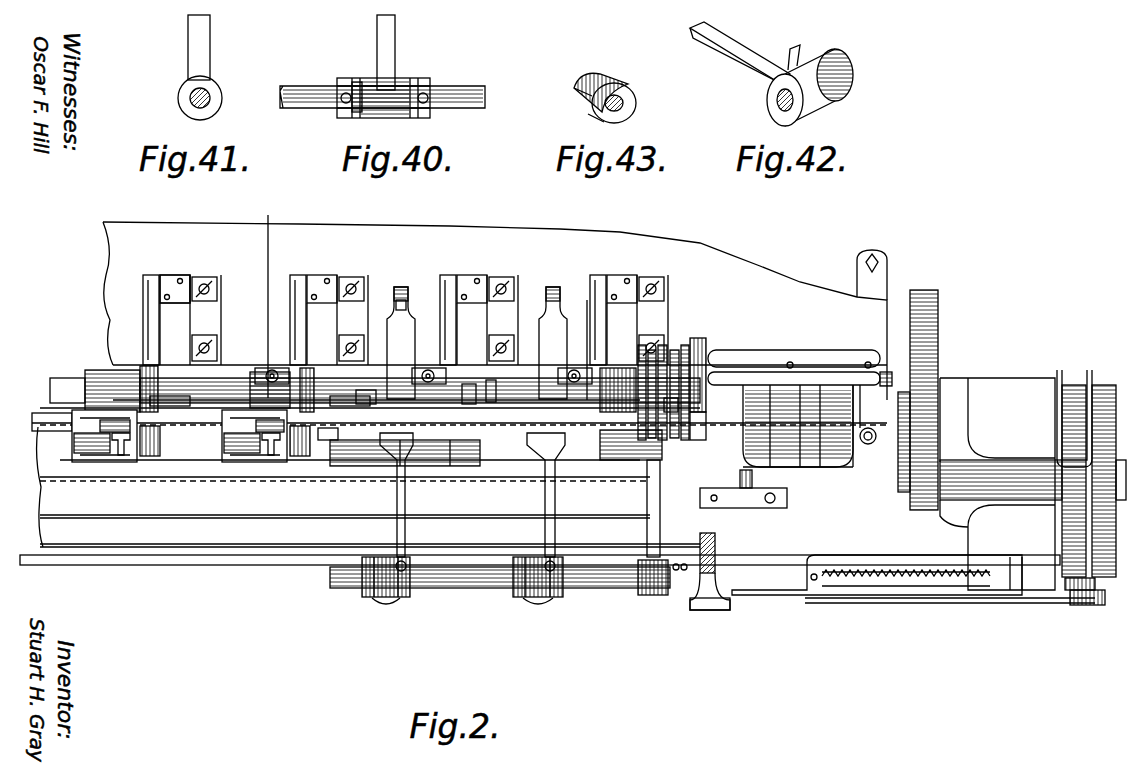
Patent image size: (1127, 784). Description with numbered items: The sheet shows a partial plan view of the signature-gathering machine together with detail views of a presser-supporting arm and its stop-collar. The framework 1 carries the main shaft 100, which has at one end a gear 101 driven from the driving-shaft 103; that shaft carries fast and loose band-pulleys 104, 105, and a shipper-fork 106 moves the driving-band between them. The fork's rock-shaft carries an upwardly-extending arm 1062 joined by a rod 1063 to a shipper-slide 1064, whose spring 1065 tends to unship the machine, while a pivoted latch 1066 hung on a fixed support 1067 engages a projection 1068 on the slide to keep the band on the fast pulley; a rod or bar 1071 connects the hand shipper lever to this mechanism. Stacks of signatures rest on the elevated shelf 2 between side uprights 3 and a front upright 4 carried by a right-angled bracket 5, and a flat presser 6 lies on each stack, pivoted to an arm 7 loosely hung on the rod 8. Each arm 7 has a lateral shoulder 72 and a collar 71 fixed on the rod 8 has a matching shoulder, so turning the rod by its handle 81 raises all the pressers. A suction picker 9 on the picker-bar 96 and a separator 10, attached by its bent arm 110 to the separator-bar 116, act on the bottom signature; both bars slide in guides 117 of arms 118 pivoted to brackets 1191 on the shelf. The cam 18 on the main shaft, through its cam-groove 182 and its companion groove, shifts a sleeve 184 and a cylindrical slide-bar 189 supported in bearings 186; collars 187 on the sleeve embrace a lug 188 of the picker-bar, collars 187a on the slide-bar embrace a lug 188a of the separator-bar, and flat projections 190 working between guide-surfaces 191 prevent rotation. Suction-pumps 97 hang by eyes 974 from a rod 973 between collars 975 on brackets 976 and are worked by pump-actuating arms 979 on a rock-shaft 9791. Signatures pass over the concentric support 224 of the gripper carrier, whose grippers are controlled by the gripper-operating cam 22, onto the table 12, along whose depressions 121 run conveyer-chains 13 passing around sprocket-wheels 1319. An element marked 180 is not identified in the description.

In FIG. 2, the framework 1 is at (978, 378).
In FIG. 2, the elevated shelf 2 is at (124, 240).
In FIG. 2, the side uprights 3 is at (140, 290).
In FIG. 2, the front upright 4 is at (246, 390).
In FIG. 2, the right-angled bracket 5 is at (150, 316).
In FIG. 2, the presser 6 is at (400, 334).
In FIG. 41, the arm 7 is at (212, 35).
In FIG. 40, the arm 7 is at (396, 32).
In FIG. 42, the arm 7 is at (738, 42).
In FIG. 2, the arm 7 is at (406, 290).
In FIG. 41, the rod 8 is at (189, 99).
In FIG. 40, the rod 8 is at (460, 84).
In FIG. 2, the rod 8 is at (350, 408).
In FIG. 2, the picker 9 is at (588, 400).
In FIG. 2, the separator 10 is at (168, 398).
In FIG. 2, the table 12 is at (232, 506).
In FIG. 2, the conveyer-chains 13 is at (46, 428).
In FIG. 2, the cam 18 is at (796, 468).
In FIG. 2, the gripper-operating cam 22 is at (136, 446).
In FIG. 41, the collar 71 is at (181, 82).
In FIG. 40, the collar 71 is at (344, 78).
In FIG. 43, the collar 71 is at (600, 72).
In FIG. 2, the collar 71 is at (366, 398).
In FIG. 40, the lateral shoulder 72 is at (364, 78).
In FIG. 42, the lateral shoulder 72 is at (752, 90).
In FIG. 2, the arm or handle 81 is at (612, 440).
In FIG. 2, the picker-bar 96 is at (672, 412).
In FIG. 2, the suction-pumps 97 is at (382, 600).
In FIG. 2, the main shaft 100 is at (76, 376).
In FIG. 2, the gear 101 is at (940, 299).
In FIG. 2, the driving-shaft 103 is at (942, 495).
In FIG. 2, the fast band-pulley 104 is at (1075, 385).
In FIG. 2, the loose band-pulley 105 is at (1100, 385).
In FIG. 2, the shipper-fork 106 is at (1060, 378).
In FIG. 2, the bent arm 110 is at (155, 442).
In FIG. 2, the separator-bar 116 is at (180, 398).
In FIG. 2, the guides 117 is at (470, 394).
In FIG. 2, the arms 118 is at (482, 440).
In FIG. 2, the longitudinal depressions 121 is at (62, 432).
In FIG. 2, the drum 180 is at (762, 430).
In FIG. 2, the cam-groove 182 is at (830, 420).
In FIG. 2, the sleeve 184 is at (702, 350).
In FIG. 2, the bearing 186 is at (752, 366).
In FIG. 2, the collars 187 is at (660, 350).
In FIG. 2, the collars 187a is at (654, 354).
In FIG. 2, the lug 188 is at (684, 352).
In FIG. 2, the lug 188a is at (642, 354).
In FIG. 2, the slide-bar 189 is at (928, 300).
In FIG. 2, the flat projections 190 is at (792, 366).
In FIG. 2, the guide-surfaces 191 is at (850, 442).
In FIG. 2, the concentric support 224 is at (92, 462).
In FIG. 2, the rod 973 is at (472, 590).
In FIG. 2, the eyes or bearings 974 is at (402, 558).
In FIG. 2, the collars 975 is at (364, 592).
In FIG. 2, the brackets 976 is at (646, 508).
In FIG. 2, the pump-actuating arms 979 is at (390, 442).
In FIG. 2, the rock-shaft 9791 is at (330, 440).
In FIG. 2, the arm 1062 is at (1090, 600).
In FIG. 2, the rod 1063 is at (1055, 598).
In FIG. 2, the shipper-slide 1064 is at (812, 600).
In FIG. 2, the spring 1065 is at (878, 584).
In FIG. 2, the pivoted latch 1066 is at (698, 602).
In FIG. 2, the fixed support 1067 is at (720, 606).
In FIG. 2, the projection 1068 is at (652, 600).
In FIG. 2, the rod or bar 1071 is at (132, 566).
In FIG. 2, the brackets 1191 is at (490, 390).
In FIG. 2, the sprocket-wheels 1319 is at (722, 432).